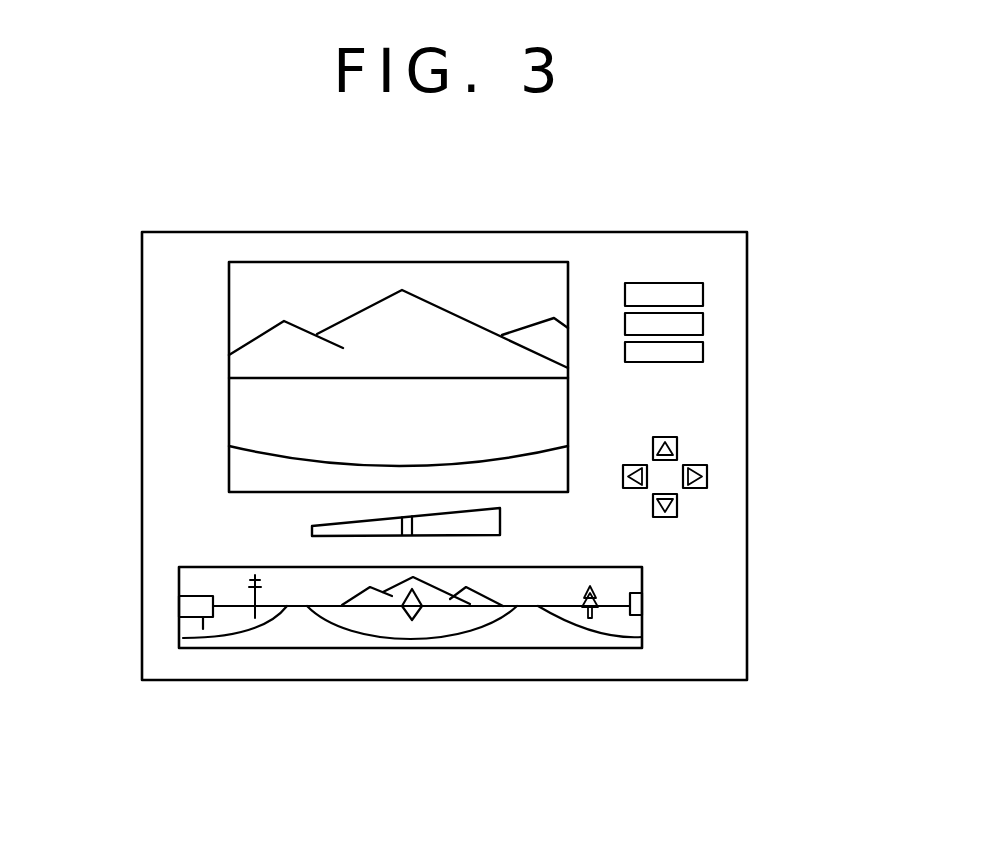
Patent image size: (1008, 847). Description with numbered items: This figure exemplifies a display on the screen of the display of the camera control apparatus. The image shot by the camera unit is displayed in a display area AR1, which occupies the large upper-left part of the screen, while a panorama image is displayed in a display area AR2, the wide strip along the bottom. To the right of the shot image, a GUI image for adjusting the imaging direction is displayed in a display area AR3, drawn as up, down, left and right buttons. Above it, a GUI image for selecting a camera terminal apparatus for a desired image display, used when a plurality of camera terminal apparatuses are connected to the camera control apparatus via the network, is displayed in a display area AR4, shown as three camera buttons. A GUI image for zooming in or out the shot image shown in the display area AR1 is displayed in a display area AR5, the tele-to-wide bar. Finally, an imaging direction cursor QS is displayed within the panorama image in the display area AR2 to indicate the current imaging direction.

The display area AR1 is at (547, 257).
The display area AR2 is at (410, 662).
The display area AR3 is at (712, 445).
The display area AR4 is at (712, 325).
The display area AR5 is at (265, 523).
The imaging direction cursor QS is at (422, 620).